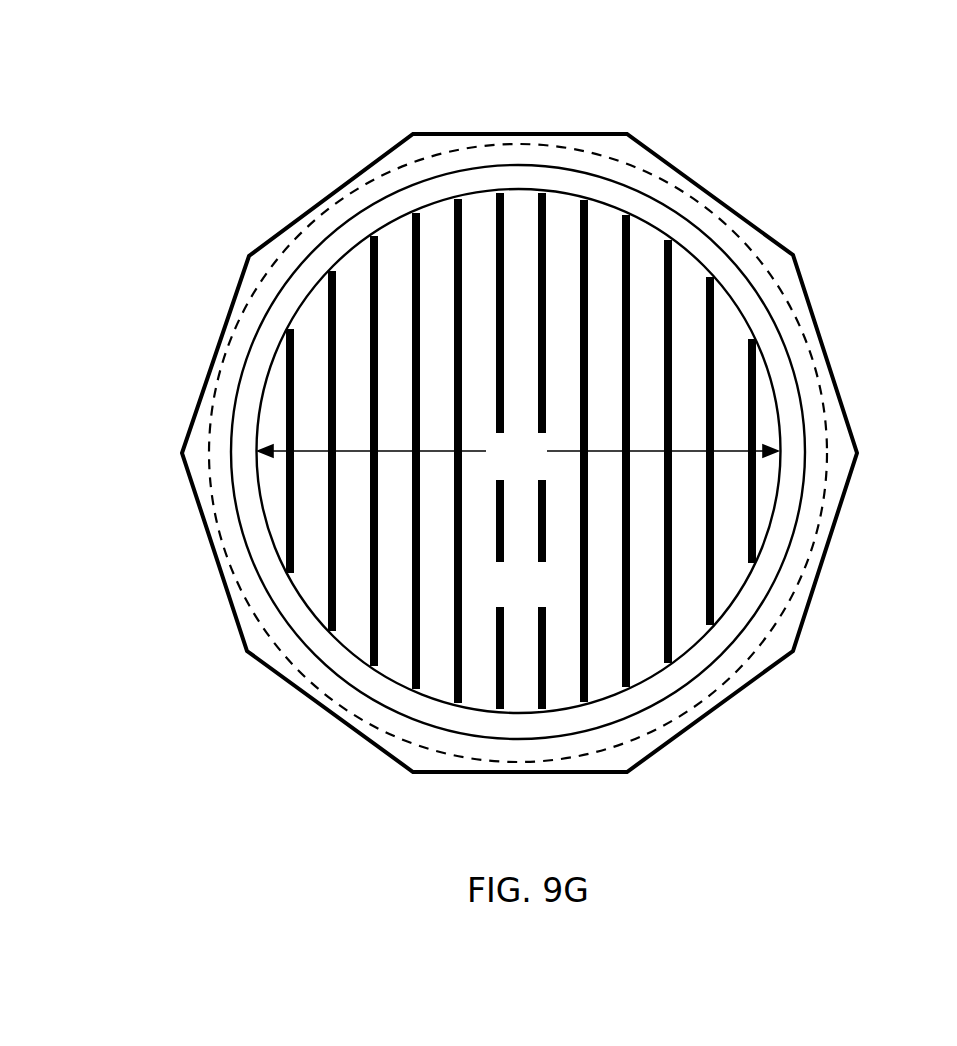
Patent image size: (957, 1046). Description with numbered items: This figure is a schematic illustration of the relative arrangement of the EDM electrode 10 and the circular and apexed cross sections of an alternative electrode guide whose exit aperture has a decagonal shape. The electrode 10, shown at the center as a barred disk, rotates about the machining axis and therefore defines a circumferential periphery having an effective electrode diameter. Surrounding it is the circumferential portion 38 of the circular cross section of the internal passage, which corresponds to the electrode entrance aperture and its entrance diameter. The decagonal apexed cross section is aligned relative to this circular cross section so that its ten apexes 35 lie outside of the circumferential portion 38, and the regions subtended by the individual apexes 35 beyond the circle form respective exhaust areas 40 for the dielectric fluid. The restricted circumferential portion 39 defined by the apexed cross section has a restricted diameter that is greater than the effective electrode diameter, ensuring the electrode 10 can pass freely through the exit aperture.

The electrode 10 is at (505, 597).
The apexes 35 is at (413, 134).
The circumferential portion 38 is at (792, 546).
The restricted circumferential portion 39 is at (214, 522).
The exhaust areas 40 is at (413, 146).